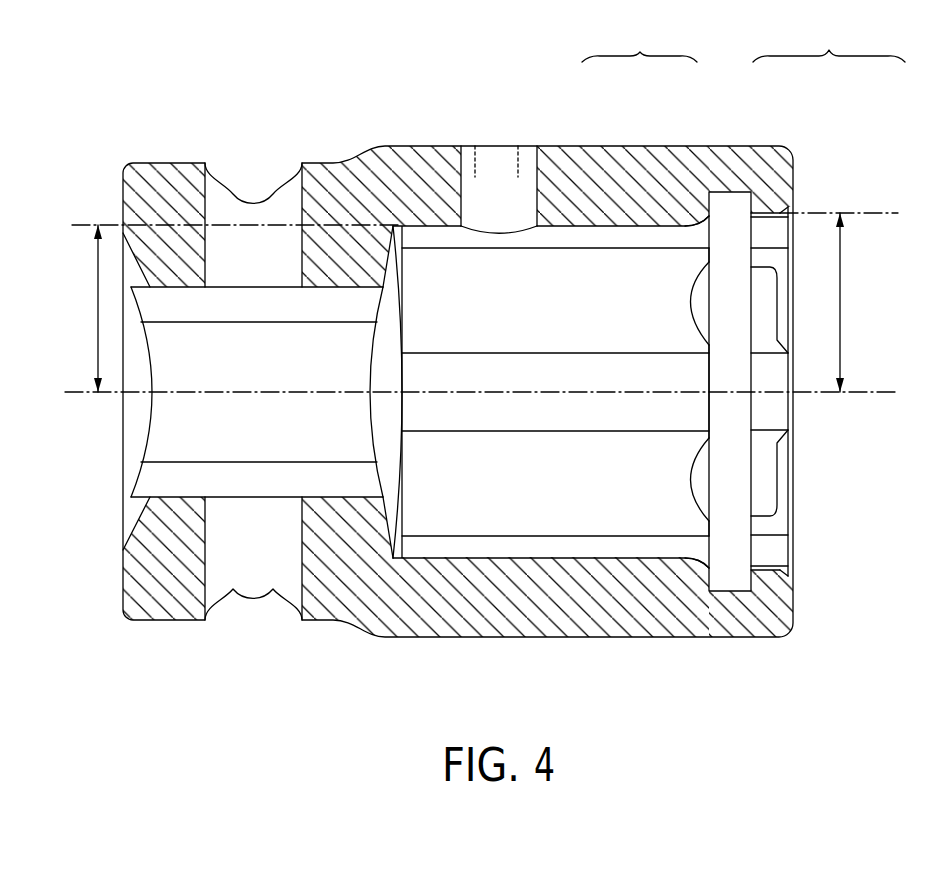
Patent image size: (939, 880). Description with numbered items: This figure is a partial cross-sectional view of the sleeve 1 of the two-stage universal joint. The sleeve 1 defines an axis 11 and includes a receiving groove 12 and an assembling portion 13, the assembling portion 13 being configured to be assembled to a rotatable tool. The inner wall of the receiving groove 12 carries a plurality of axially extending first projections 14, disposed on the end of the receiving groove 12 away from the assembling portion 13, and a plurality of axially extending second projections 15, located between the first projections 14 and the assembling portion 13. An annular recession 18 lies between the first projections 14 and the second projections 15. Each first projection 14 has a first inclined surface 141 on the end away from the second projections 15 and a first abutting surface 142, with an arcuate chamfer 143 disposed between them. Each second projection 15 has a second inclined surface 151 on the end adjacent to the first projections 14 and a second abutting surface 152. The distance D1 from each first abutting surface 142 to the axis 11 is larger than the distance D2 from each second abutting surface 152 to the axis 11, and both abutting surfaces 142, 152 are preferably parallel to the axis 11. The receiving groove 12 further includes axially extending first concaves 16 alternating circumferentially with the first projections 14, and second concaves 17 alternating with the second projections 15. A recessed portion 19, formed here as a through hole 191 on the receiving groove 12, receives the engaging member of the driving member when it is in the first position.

The sleeve 1 is at (336, 113).
The axis 11 is at (865, 393).
The receiving groove 12 is at (790, 493).
The assembling portion 13 is at (147, 407).
The first projections 14 is at (829, 298).
The first inclined surfaces 141 is at (790, 205).
The first abutting surfaces 142 is at (765, 209).
The arcuate chamfer 143 is at (777, 210).
The second projections 15 is at (645, 279).
The second inclined surfaces 151 is at (697, 220).
The second abutting surfaces 152 is at (620, 225).
The first concaves 16 is at (768, 406).
The second concaves 17 is at (625, 410).
The annular recession 18 is at (725, 573).
The recessed portion 19 is at (518, 146).
The through hole 191 is at (476, 146).
The distance from first abutting surfaces to axis D1 is at (840, 292).
The distance from second abutting surfaces to axis D2 is at (98, 322).